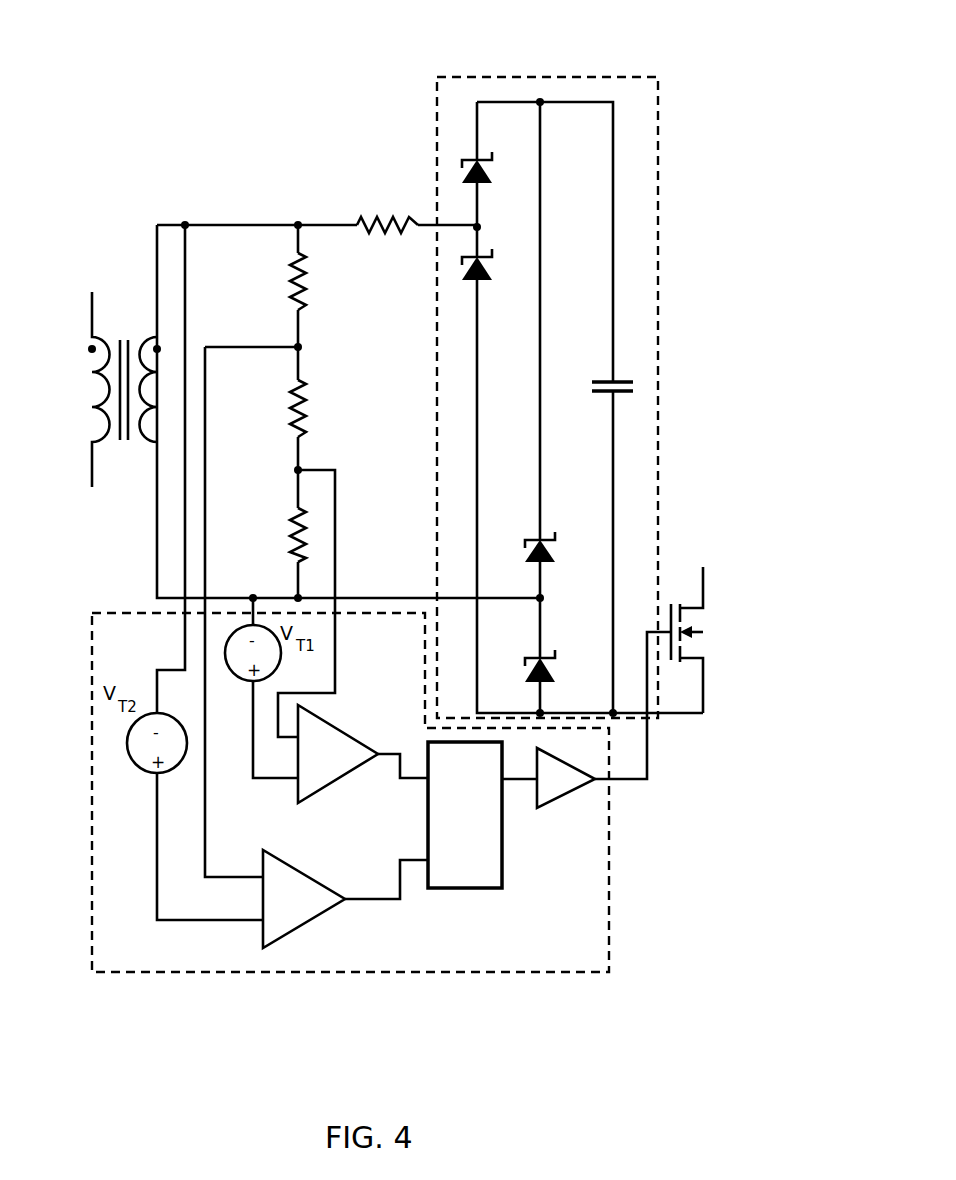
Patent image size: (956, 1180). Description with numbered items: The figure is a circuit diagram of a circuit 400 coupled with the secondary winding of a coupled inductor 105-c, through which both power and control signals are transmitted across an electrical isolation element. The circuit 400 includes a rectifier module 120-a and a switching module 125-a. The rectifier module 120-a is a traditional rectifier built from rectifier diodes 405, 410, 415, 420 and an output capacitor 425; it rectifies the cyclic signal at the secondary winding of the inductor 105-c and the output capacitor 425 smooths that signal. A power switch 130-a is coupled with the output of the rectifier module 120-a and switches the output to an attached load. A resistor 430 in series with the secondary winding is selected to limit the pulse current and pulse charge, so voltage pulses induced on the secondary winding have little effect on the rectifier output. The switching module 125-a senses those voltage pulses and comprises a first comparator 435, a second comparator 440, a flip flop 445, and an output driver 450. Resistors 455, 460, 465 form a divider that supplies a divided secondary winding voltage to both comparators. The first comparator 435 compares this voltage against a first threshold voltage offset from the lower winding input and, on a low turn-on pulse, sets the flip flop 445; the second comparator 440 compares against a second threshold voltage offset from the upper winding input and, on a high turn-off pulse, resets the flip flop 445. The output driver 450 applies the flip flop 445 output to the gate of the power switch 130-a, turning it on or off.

The inductor 105-c is at (148, 337).
The rectifier module 120-a is at (552, 77).
The switching module 125-a is at (92, 712).
The power switch 130-a is at (703, 590).
The circuit 400 is at (660, 1022).
The rectifier diode 405 is at (485, 170).
The rectifier diode 410 is at (485, 268).
The rectifier diode 415 is at (548, 550).
The rectifier diode 420 is at (548, 668).
The output capacitor 425 is at (605, 380).
The resistor 430 is at (380, 220).
The first comparator 435 is at (343, 735).
The second comparator 440 is at (305, 877).
The flip flop 445 is at (502, 875).
The output driver 450 is at (570, 797).
The resistor 455 is at (300, 292).
The resistor 460 is at (300, 395).
The resistor 465 is at (292, 555).